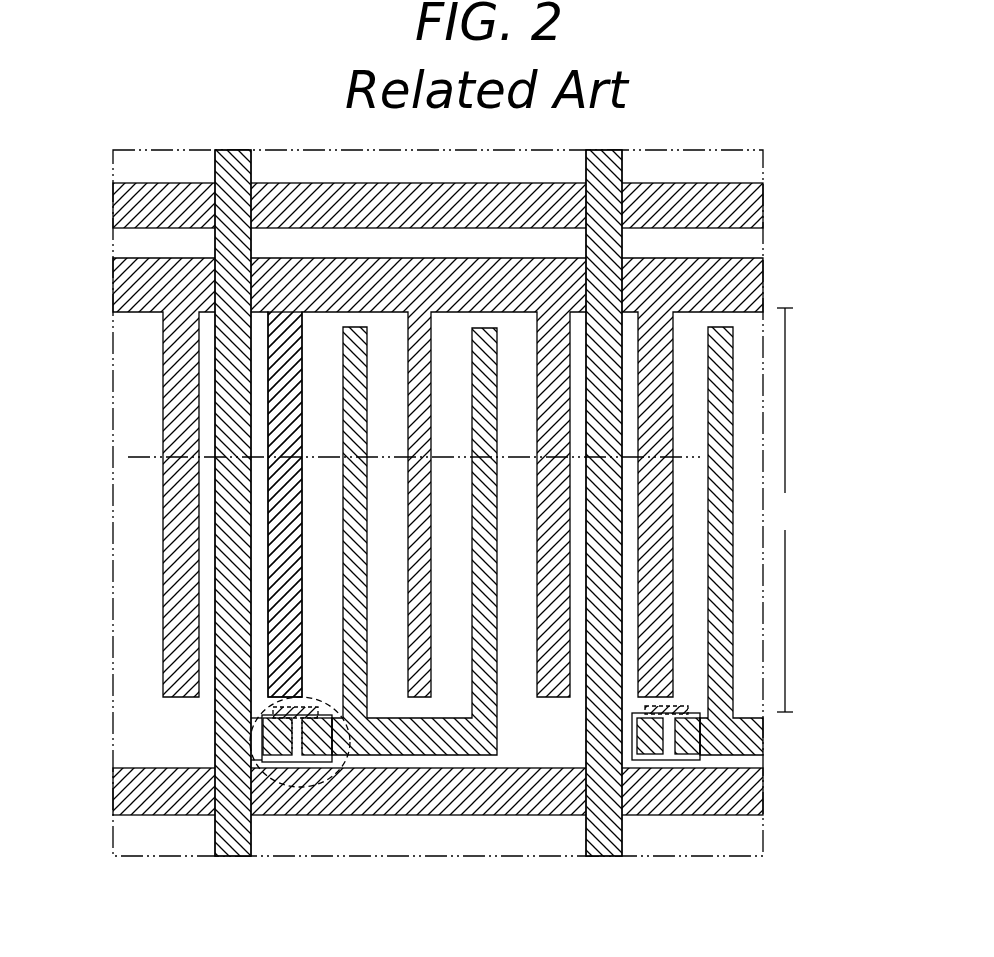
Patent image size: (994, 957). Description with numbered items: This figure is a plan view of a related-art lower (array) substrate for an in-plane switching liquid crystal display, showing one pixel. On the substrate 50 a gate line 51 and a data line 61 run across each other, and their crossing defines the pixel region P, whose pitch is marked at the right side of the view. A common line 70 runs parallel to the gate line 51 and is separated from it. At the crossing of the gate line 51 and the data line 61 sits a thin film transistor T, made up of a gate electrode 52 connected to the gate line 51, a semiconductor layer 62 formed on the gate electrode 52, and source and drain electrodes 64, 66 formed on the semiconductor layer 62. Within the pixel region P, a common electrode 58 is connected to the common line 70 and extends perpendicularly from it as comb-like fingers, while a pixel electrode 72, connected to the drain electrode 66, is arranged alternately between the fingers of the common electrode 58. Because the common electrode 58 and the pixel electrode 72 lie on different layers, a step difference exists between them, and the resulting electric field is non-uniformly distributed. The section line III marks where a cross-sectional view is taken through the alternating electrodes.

The substrate 50 is at (735, 857).
The gate line 51 is at (763, 207).
The common line 70 is at (763, 283).
The common electrode 58 is at (268, 603).
The pixel electrode 72 is at (367, 588).
The data line 61 is at (215, 523).
The thin film transistor T is at (250, 733).
The source electrode 64 is at (285, 763).
The semiconductor layer 62 is at (317, 763).
The gate electrode 52 is at (303, 706).
The drain electrode 66 is at (345, 735).
The section line III- III is at (141, 457).
The pixel region P is at (785, 510).